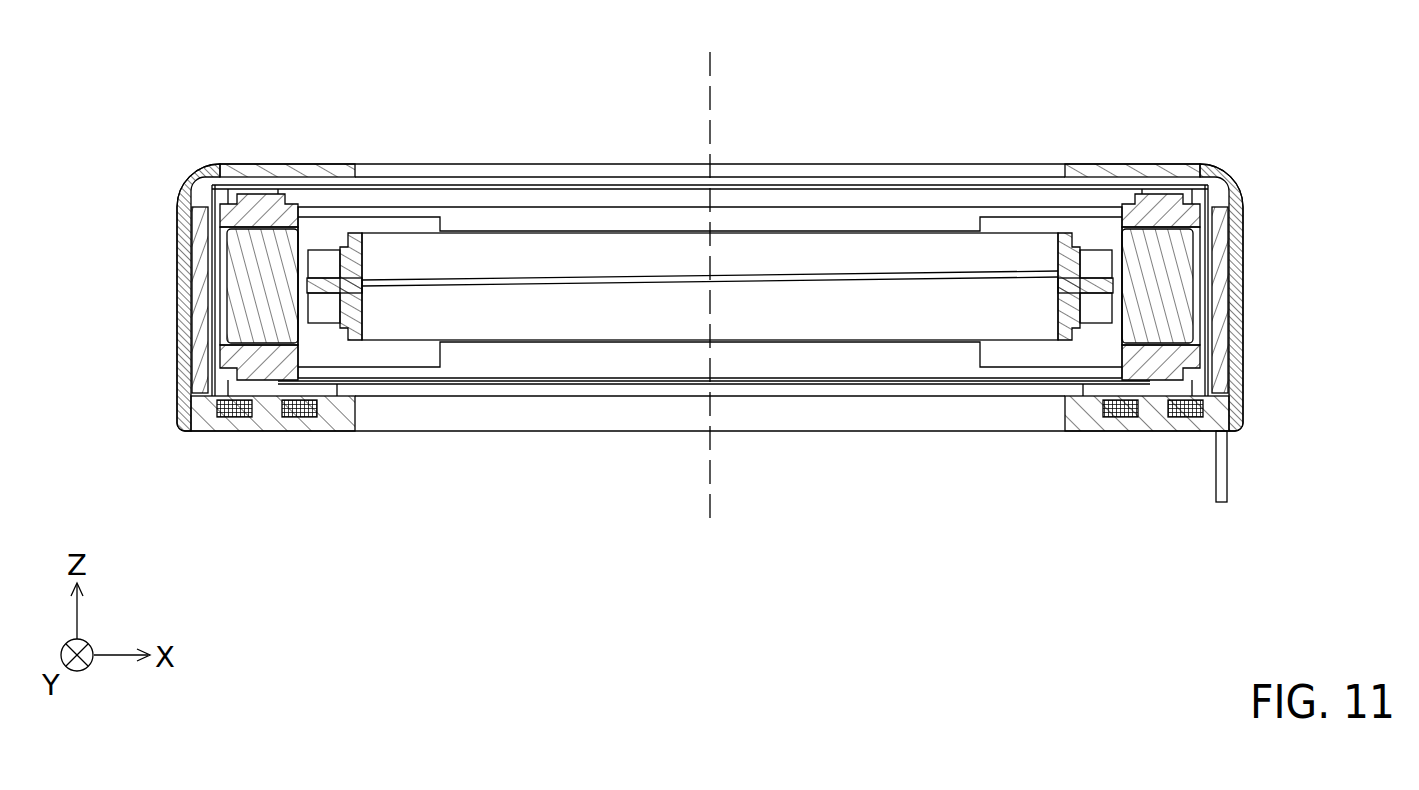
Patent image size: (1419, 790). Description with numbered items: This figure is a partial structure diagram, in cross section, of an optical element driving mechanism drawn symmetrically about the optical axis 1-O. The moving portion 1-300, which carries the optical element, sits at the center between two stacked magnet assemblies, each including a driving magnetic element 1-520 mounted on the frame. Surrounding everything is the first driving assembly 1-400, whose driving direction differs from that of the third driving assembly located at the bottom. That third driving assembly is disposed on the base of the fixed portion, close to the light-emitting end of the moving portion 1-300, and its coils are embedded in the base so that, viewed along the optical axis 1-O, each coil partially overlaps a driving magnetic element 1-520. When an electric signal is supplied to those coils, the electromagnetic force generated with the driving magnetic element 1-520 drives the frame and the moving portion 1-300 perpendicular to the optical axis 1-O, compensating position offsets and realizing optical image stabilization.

The optical axis 1-O is at (709, 274).
The moving portion 1-300 is at (868, 257).
The first driving assembly 1-400 is at (1243, 243).
The driving magnetic element 1-520 is at (1155, 291).